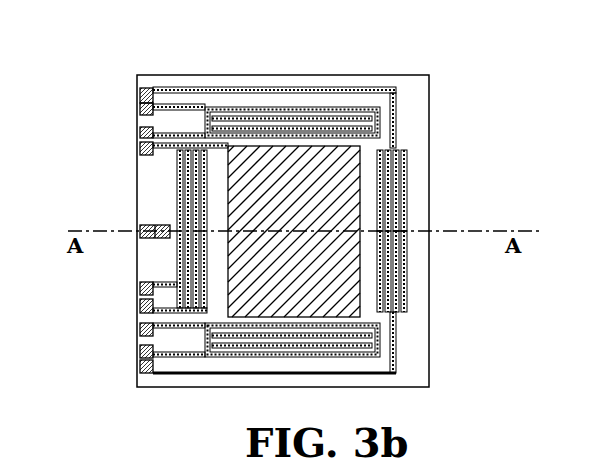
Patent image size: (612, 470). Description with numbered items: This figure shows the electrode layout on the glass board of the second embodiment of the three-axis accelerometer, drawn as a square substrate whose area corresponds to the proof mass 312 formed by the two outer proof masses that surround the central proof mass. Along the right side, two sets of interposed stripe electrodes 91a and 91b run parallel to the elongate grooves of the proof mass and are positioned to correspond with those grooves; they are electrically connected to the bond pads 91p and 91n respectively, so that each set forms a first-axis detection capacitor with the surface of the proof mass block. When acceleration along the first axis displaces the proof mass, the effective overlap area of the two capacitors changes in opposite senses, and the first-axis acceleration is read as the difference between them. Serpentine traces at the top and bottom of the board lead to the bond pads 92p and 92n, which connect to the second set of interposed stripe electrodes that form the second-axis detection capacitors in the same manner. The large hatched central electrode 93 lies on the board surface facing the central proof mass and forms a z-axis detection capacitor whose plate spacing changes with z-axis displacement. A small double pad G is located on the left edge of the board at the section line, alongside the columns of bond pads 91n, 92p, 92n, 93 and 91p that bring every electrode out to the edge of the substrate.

The proof mass 312 is at (290, 112).
The bond pad 91n is at (137, 84).
The bond pad 91p is at (137, 307).
The bond pad 92p is at (137, 106).
The bond pad 92n is at (137, 132).
The electrode 93 is at (137, 148).
The ground pad G is at (137, 229).
The stripe electrodes 91a is at (410, 275).
The stripe electrodes 91b is at (410, 191).